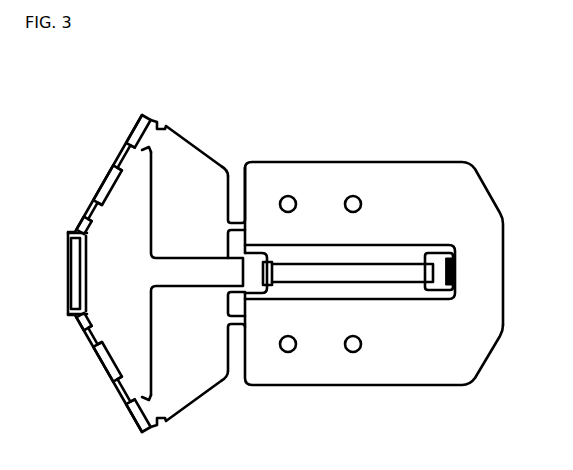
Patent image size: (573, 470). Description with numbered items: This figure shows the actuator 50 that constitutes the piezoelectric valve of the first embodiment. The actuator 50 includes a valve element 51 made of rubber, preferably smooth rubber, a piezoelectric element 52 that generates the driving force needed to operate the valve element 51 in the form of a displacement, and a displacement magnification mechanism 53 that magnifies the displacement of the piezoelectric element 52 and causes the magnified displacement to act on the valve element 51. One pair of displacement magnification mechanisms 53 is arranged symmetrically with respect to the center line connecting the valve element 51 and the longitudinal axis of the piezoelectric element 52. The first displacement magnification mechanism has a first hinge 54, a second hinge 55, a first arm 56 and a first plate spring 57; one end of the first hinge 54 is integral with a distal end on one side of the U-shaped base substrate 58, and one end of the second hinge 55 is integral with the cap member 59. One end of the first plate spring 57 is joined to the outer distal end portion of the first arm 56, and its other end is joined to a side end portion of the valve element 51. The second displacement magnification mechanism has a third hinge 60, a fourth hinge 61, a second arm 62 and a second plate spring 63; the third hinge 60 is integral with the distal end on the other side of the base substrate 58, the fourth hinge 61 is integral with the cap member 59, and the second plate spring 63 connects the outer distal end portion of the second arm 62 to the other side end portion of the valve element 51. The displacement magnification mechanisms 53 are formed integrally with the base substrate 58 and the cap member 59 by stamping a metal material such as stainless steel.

The actuator 50 is at (345, 128).
The valve element 51 is at (78, 304).
The piezoelectric element 52 is at (380, 268).
The displacement magnification mechanism 53 is at (272, 134).
The first hinge 54 is at (233, 222).
The second hinge 55 is at (240, 258).
The first arm 56 is at (201, 162).
The first plate spring 57 is at (107, 172).
The U-shaped base substrate 58 is at (465, 348).
The cap member 59 is at (255, 288).
The third hinge 60 is at (235, 333).
The fourth hinge 61 is at (235, 294).
The second arm 62 is at (203, 386).
The second plate spring 63 is at (108, 377).